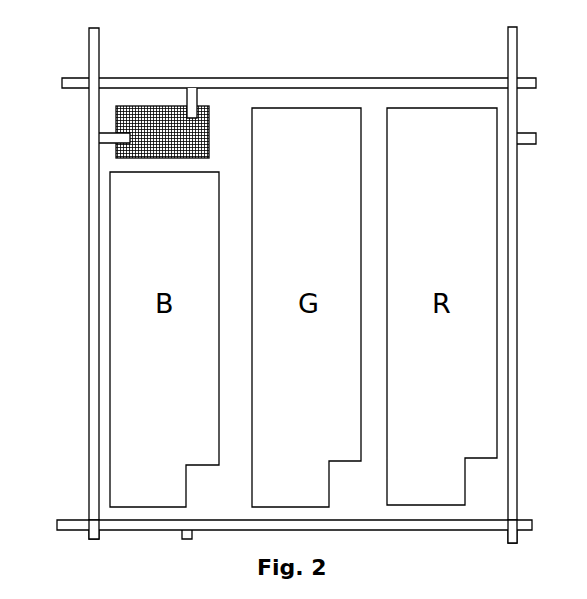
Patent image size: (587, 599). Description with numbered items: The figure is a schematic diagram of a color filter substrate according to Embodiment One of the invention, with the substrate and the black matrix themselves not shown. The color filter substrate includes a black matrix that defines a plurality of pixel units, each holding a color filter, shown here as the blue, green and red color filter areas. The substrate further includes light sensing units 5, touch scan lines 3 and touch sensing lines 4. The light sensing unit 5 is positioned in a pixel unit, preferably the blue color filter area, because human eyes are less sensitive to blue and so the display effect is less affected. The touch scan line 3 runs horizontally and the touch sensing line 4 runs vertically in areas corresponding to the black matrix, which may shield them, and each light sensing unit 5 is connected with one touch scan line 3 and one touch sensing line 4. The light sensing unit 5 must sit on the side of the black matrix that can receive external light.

The touch scan line 3 is at (68, 90).
The touch sensing line 4 is at (99, 62).
The light sensing unit 5 is at (210, 107).